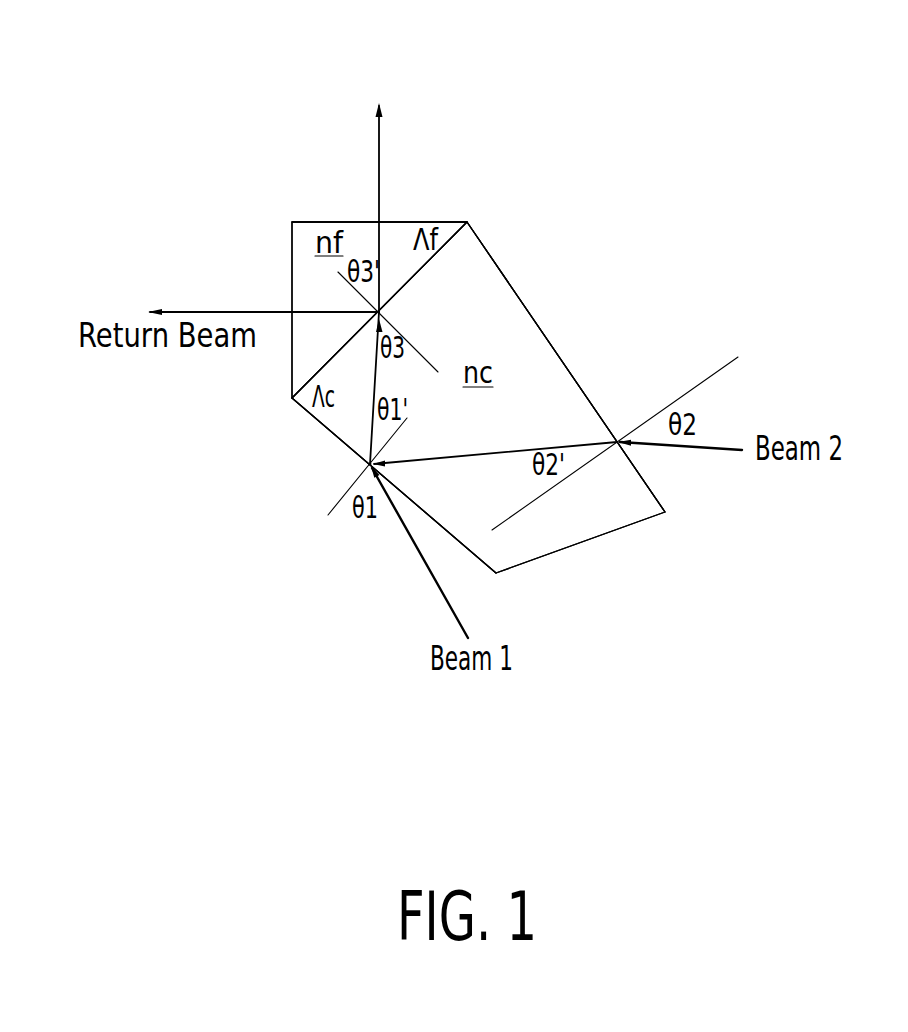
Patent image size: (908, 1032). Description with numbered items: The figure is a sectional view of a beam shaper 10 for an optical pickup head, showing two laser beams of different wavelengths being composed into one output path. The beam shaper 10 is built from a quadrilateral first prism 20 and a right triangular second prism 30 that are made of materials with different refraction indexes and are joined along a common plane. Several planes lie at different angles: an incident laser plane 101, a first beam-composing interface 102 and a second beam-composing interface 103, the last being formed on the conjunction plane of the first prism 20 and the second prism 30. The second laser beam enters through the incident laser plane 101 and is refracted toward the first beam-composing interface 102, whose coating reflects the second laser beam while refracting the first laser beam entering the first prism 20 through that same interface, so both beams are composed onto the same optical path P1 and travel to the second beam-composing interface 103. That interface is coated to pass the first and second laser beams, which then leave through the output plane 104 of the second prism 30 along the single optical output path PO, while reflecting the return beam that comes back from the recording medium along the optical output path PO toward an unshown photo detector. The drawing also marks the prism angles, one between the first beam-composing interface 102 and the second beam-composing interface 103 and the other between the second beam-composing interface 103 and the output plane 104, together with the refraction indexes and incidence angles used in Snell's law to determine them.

The beam shaper 10 is at (186, 270).
The first prism 20 is at (563, 397).
The second prism 30 is at (288, 242).
The incident laser plane 101 is at (653, 487).
The first beam-composing interface 102 is at (349, 447).
The second beam-composing interface 103 is at (402, 287).
The output plane 104 is at (308, 222).
The optical path P1 is at (367, 422).
The optical output path PO is at (377, 187).